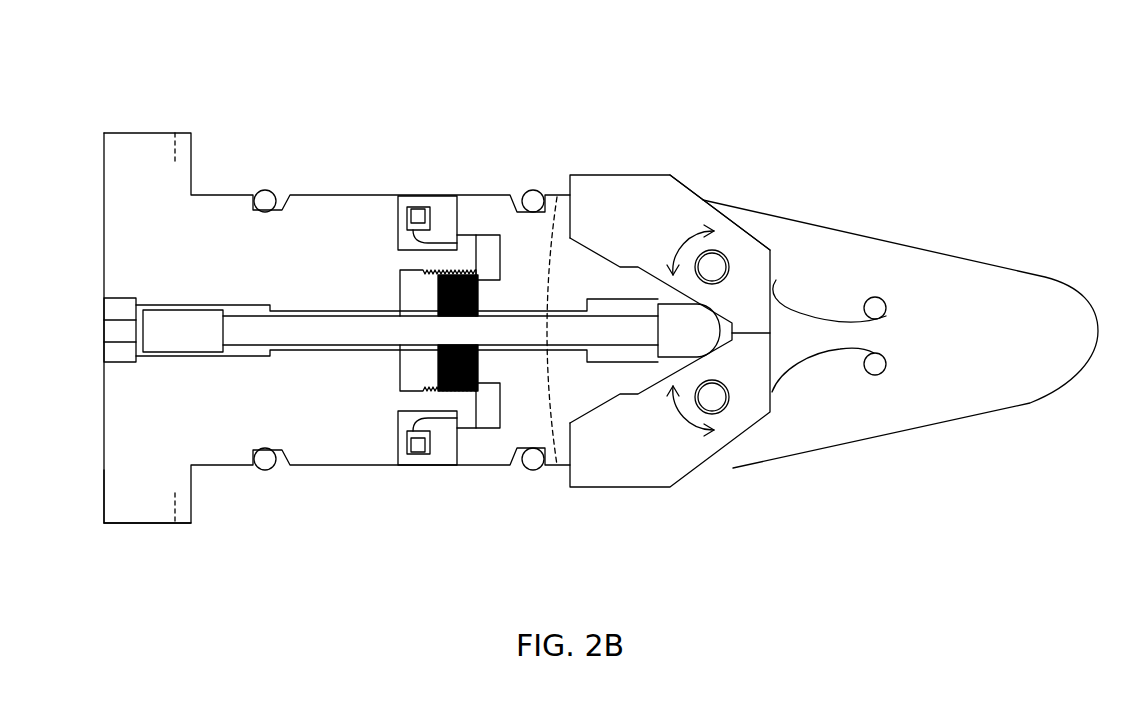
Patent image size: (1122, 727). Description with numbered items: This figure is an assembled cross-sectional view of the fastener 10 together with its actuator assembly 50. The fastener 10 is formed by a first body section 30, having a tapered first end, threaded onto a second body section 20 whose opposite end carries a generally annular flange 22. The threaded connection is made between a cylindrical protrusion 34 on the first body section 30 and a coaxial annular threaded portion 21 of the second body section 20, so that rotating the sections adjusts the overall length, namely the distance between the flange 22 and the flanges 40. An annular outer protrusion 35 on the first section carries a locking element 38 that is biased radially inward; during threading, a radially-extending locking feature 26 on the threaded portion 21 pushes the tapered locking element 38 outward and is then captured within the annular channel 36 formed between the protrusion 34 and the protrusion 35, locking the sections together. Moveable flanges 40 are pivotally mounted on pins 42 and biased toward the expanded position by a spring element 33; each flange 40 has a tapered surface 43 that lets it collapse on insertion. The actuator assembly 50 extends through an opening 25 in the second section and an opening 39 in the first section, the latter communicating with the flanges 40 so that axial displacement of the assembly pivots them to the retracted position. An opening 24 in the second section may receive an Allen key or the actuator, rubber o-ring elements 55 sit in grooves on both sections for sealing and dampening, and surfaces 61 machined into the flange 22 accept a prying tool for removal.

The fastener 10 is at (460, 112).
The second body section 20 is at (219, 448).
The annular threaded portion 21 is at (438, 262).
The annular flange 22 is at (133, 515).
The opening 24 is at (108, 352).
The opening 25 is at (235, 307).
The locking feature 26 is at (462, 240).
The first body section 30 is at (858, 247).
The spring element 33 is at (867, 373).
The cylindrical protrusion 34 is at (448, 393).
The annular outer protrusion 35 is at (423, 460).
The annular channel 36 is at (488, 418).
The locking element 38 is at (413, 207).
The opening 39 is at (608, 358).
The flange 40 is at (600, 182).
The pin 42 is at (715, 265).
The tapered surface 43 is at (690, 187).
The actuator assembly 50 is at (186, 370).
The sealing/anti-vibration element 55 is at (265, 189).
The surface 61 is at (181, 518).